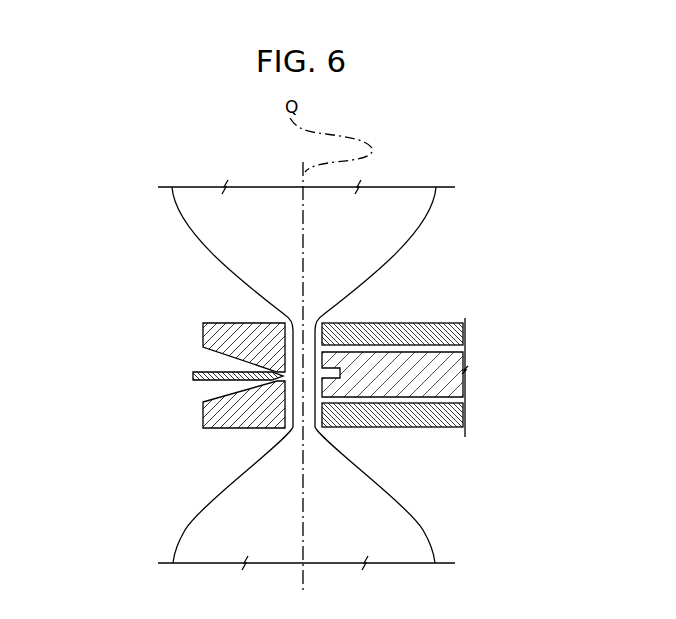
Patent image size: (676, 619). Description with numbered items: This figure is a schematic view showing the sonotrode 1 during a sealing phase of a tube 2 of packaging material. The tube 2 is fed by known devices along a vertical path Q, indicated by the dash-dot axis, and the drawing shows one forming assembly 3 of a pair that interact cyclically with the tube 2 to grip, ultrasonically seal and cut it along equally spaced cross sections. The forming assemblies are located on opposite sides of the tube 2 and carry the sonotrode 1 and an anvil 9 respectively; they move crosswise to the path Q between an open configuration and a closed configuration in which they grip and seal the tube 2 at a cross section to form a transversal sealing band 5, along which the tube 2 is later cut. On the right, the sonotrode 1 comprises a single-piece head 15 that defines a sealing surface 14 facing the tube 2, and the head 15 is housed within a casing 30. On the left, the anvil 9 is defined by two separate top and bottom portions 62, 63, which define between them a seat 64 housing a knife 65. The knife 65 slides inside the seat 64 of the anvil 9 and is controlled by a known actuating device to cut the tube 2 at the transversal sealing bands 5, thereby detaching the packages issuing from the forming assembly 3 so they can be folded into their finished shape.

The sonotrode 1 is at (417, 363).
The tube of packaging material 2 is at (186, 229).
The forming assembly 3 is at (420, 436).
The transversal sealing band 5 is at (280, 412).
The anvil 9 is at (186, 389).
The sealing surface 14 is at (320, 374).
The head 15 is at (458, 382).
The casing 30 is at (414, 340).
The top portion of anvil 62 is at (203, 414).
The bottom portion of anvil 63 is at (205, 335).
The seat 64 is at (268, 385).
The knife 65 is at (205, 372).